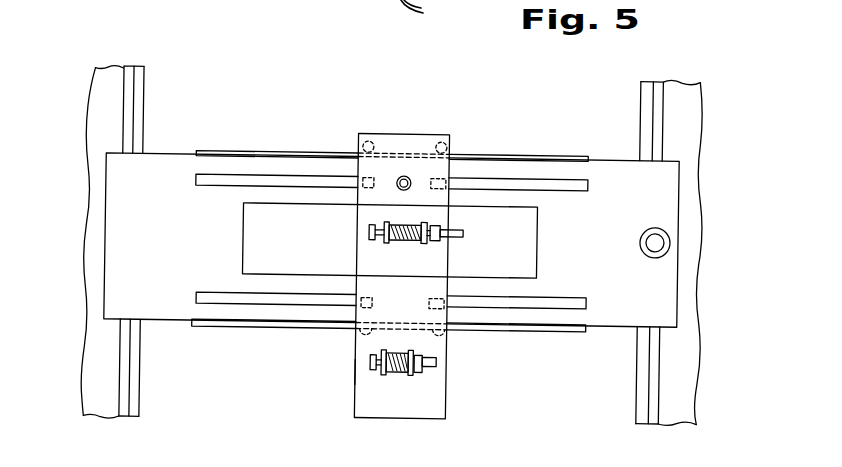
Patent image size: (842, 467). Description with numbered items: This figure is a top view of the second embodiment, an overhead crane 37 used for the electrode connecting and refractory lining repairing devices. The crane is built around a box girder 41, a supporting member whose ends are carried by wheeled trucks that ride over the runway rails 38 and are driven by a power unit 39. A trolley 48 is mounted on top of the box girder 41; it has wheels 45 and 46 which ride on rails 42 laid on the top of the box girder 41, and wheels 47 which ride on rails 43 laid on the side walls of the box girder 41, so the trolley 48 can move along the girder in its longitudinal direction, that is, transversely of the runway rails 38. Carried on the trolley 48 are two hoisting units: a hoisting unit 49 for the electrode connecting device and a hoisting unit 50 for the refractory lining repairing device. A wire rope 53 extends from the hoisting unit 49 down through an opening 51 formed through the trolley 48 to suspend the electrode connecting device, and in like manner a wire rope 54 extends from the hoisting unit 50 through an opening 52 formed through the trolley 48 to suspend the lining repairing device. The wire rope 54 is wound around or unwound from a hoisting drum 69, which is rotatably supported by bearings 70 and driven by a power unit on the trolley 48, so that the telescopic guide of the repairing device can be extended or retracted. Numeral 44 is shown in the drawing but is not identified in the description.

The overhead crane 37 is at (236, 100).
The runway rails 38 is at (658, 102).
The power unit 39 is at (668, 243).
The box girder 41 is at (608, 175).
The rails 42 is at (547, 183).
The rails 43 is at (500, 178).
The pivot hole 44 is at (404, 175).
The wheels 45 is at (359, 152).
The wheels 46 is at (362, 303).
The wheels 47 is at (445, 138).
The trolley 48 is at (368, 398).
The hoisting unit 49 is at (359, 233).
The hoisting unit 50 is at (355, 371).
The opening 51 is at (449, 241).
The opening 52 is at (438, 403).
The wire rope 53 is at (412, 226).
The wire rope 54 is at (437, 362).
The hoisting drum 69 is at (390, 373).
The bearings 70 is at (375, 372).